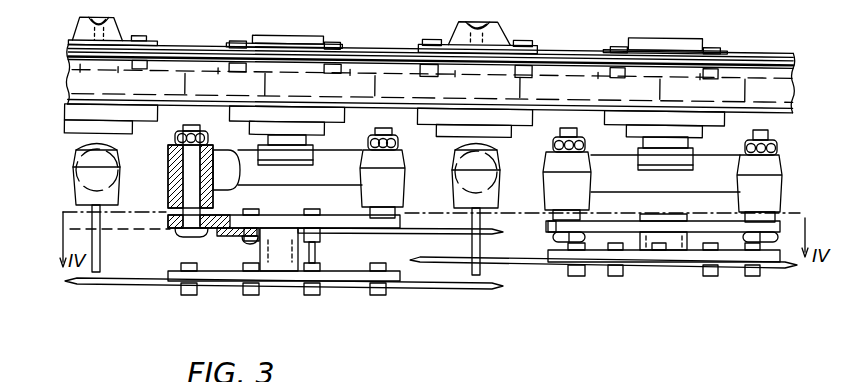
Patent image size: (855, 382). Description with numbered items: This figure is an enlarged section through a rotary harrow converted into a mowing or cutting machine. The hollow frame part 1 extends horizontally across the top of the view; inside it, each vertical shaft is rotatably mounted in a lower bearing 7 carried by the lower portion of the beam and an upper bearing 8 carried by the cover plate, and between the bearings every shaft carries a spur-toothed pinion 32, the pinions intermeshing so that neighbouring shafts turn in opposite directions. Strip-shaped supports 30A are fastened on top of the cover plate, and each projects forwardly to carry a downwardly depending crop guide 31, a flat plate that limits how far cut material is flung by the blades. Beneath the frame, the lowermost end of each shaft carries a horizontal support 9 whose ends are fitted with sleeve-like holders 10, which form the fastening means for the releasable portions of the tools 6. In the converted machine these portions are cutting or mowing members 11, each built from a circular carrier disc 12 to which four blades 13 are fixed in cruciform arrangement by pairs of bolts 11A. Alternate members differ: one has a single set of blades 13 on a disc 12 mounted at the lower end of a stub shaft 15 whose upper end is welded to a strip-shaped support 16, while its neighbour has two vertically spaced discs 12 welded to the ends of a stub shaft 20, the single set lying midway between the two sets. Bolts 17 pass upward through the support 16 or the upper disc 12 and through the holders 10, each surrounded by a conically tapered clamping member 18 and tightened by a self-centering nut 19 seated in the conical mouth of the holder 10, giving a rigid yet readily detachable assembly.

The frame part 1 is at (565, 44).
The tool 6 is at (233, 152).
The lower bearing 7 is at (418, 113).
The upper bearing 8 is at (262, 35).
The support 9 is at (339, 158).
The holder 10 is at (167, 166).
The cutting or mowing member 11 is at (127, 288).
The bolts 11A is at (190, 296).
The carrier disc 12 is at (236, 219).
The blade 13 is at (422, 232).
The stub shaft 15 is at (647, 218).
The strip-shaped support 16 is at (547, 226).
The bolt 17 is at (191, 128).
The clamping member 18 is at (168, 208).
The nut 19 is at (175, 136).
The stub shaft 20 is at (297, 258).
The strip-shaped support 30A is at (79, 23).
The crop guide 31 is at (101, 253).
The pinion 32 is at (377, 40).